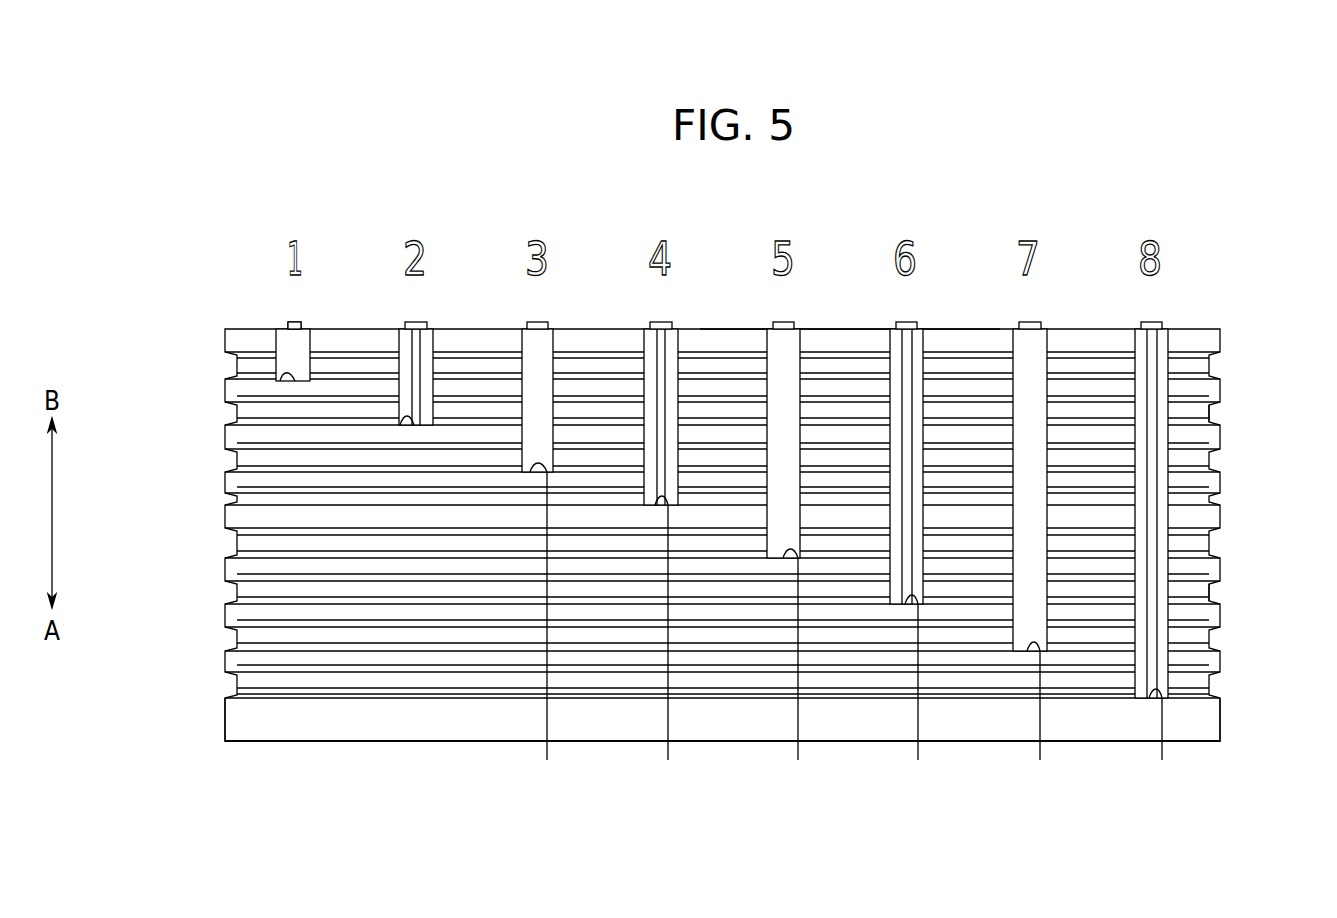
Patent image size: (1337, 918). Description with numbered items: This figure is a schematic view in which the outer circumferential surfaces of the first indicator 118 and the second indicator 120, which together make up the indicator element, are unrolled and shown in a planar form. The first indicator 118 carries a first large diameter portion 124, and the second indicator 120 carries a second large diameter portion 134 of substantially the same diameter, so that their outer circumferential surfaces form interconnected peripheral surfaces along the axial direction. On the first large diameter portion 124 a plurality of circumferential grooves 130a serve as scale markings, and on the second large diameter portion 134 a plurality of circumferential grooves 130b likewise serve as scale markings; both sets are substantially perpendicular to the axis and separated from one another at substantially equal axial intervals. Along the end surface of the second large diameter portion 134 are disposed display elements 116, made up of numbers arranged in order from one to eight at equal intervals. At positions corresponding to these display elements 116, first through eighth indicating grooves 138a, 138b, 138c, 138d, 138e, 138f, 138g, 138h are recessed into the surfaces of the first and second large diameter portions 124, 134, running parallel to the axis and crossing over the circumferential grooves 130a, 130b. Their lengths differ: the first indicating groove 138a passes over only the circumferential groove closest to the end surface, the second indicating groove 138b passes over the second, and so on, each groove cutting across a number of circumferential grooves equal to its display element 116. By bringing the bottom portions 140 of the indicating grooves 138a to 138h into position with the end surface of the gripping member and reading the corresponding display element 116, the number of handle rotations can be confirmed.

The display elements 116 is at (293, 320).
The first indicator 118 is at (1213, 326).
The second indicator 120 is at (618, 742).
The first large diameter portion 124 is at (853, 718).
The circumferential grooves 130a is at (1198, 586).
The circumferential grooves 130b is at (1198, 407).
The second large diameter portion 134 is at (866, 345).
The first indicating groove 138a is at (290, 348).
The second indicating groove 138b is at (427, 338).
The third indicating groove 138c is at (548, 338).
The fourth indicating groove 138d is at (672, 338).
The fifth indicating groove 138e is at (795, 338).
The sixth indicating groove 138f is at (918, 338).
The seventh indicating groove 138g is at (1041, 338).
The eighth indicating groove 138h is at (1163, 338).
The bottom portions 140 is at (287, 381).